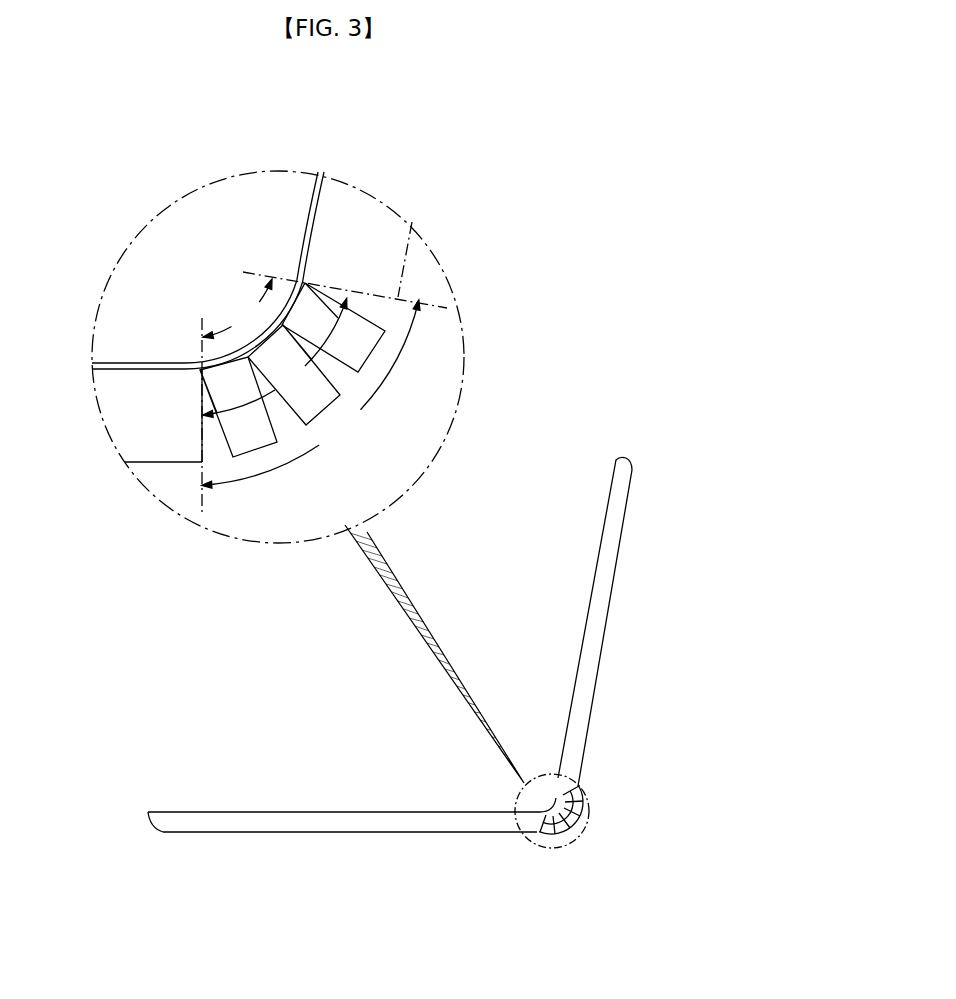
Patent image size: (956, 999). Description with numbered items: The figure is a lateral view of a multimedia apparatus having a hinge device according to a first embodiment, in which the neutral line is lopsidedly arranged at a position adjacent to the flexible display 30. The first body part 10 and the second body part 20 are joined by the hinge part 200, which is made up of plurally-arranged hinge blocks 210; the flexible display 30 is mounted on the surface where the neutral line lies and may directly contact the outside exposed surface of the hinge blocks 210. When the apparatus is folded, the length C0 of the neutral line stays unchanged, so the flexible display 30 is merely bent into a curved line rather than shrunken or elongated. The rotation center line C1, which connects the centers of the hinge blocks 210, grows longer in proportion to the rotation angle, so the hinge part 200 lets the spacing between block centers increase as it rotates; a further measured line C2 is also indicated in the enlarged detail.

The first body part 10 is at (130, 417).
The second body part 20 is at (383, 268).
The flexible display 30 is at (307, 232).
The hinge part 200 is at (568, 838).
The hinge block 210 is at (412, 324).
The length of the neutral line C0 is at (237, 309).
The rotation center line of the hinge part C1 is at (275, 358).
The second rotation position / angle C2 is at (311, 394).